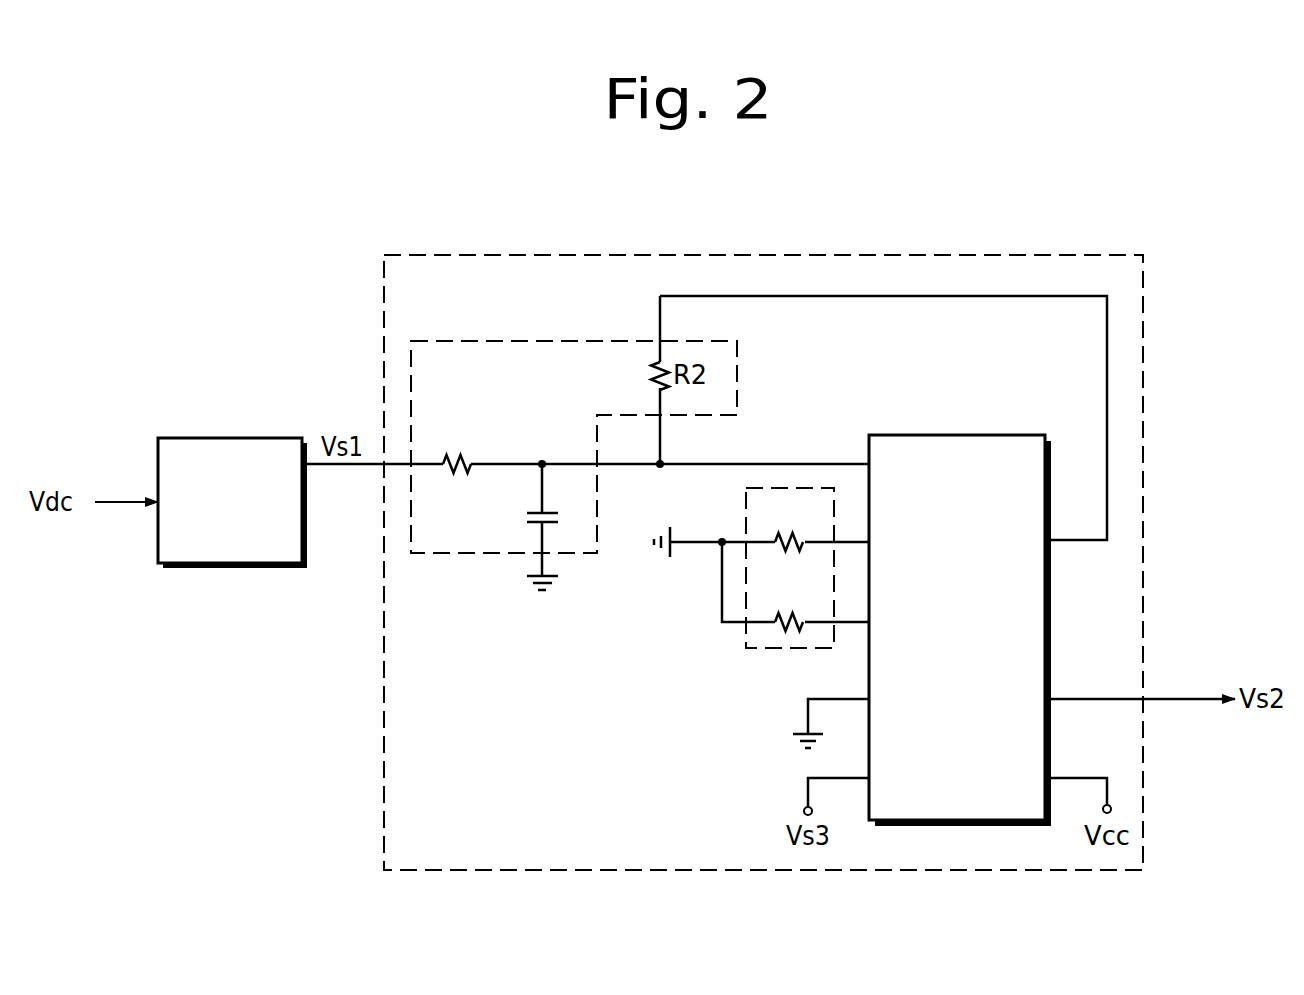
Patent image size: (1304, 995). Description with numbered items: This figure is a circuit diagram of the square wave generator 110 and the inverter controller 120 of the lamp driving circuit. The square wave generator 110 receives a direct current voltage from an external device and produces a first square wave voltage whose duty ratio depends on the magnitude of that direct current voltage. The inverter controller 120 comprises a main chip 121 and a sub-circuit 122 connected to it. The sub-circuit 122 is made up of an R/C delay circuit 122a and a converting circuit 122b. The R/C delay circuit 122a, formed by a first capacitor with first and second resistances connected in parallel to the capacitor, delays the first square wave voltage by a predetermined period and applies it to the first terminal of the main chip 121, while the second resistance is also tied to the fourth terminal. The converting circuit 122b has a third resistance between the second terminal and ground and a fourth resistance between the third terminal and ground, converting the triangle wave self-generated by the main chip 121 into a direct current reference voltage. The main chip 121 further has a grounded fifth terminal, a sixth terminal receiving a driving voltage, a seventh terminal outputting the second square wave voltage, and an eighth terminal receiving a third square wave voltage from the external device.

The square wave generator 110 is at (252, 438).
The inverter controller 120 is at (1066, 255).
The main chip 121 is at (995, 435).
The sub-circuit 122 is at (640, 564).
The R/C delay circuit 122a is at (577, 553).
The converting circuit 122b is at (761, 612).